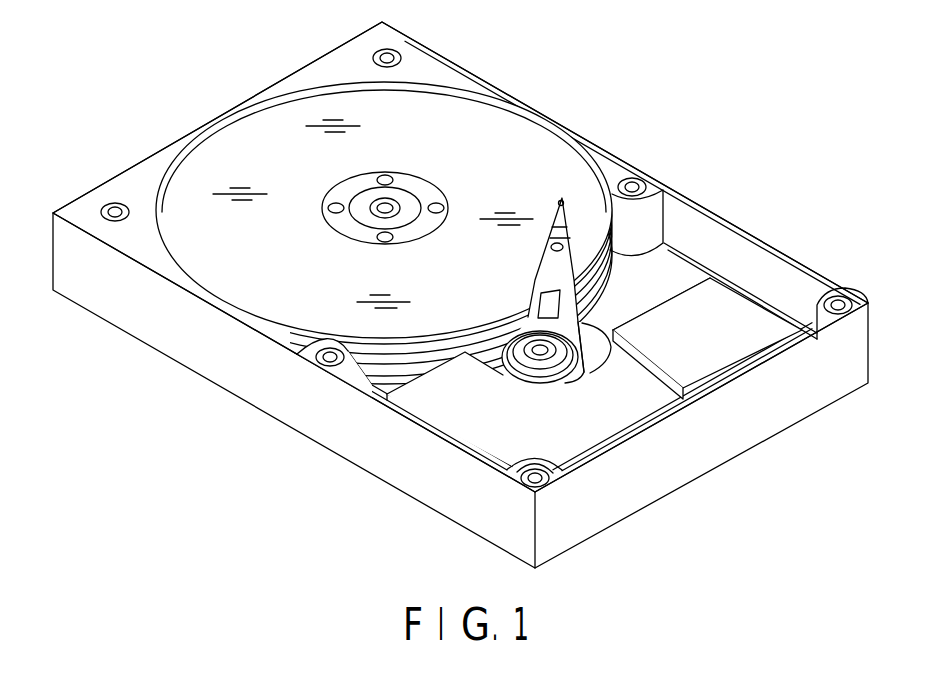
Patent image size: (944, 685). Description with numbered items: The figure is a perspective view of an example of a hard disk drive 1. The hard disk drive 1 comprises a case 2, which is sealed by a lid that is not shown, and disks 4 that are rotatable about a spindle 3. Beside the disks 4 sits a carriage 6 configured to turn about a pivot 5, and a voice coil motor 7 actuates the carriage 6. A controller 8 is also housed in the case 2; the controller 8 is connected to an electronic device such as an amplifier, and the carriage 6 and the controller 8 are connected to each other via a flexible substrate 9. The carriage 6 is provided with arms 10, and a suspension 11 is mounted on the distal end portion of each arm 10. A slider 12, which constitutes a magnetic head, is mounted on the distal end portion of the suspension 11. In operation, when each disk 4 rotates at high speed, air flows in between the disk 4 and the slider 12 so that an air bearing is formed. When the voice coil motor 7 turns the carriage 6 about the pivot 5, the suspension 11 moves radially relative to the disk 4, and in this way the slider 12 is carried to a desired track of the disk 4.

The hard disk drive 1 is at (656, 102).
The case 2 is at (223, 373).
The spindle 3 is at (406, 202).
The disks 4 is at (499, 124).
The pivot 5 is at (548, 357).
The carriage 6 is at (588, 310).
The voice coil motor 7 is at (468, 428).
The controller 8 is at (730, 360).
The flexible substrate 9 is at (643, 310).
The arms 10 is at (550, 268).
The suspension 11 is at (558, 200).
The slider 12 is at (567, 323).